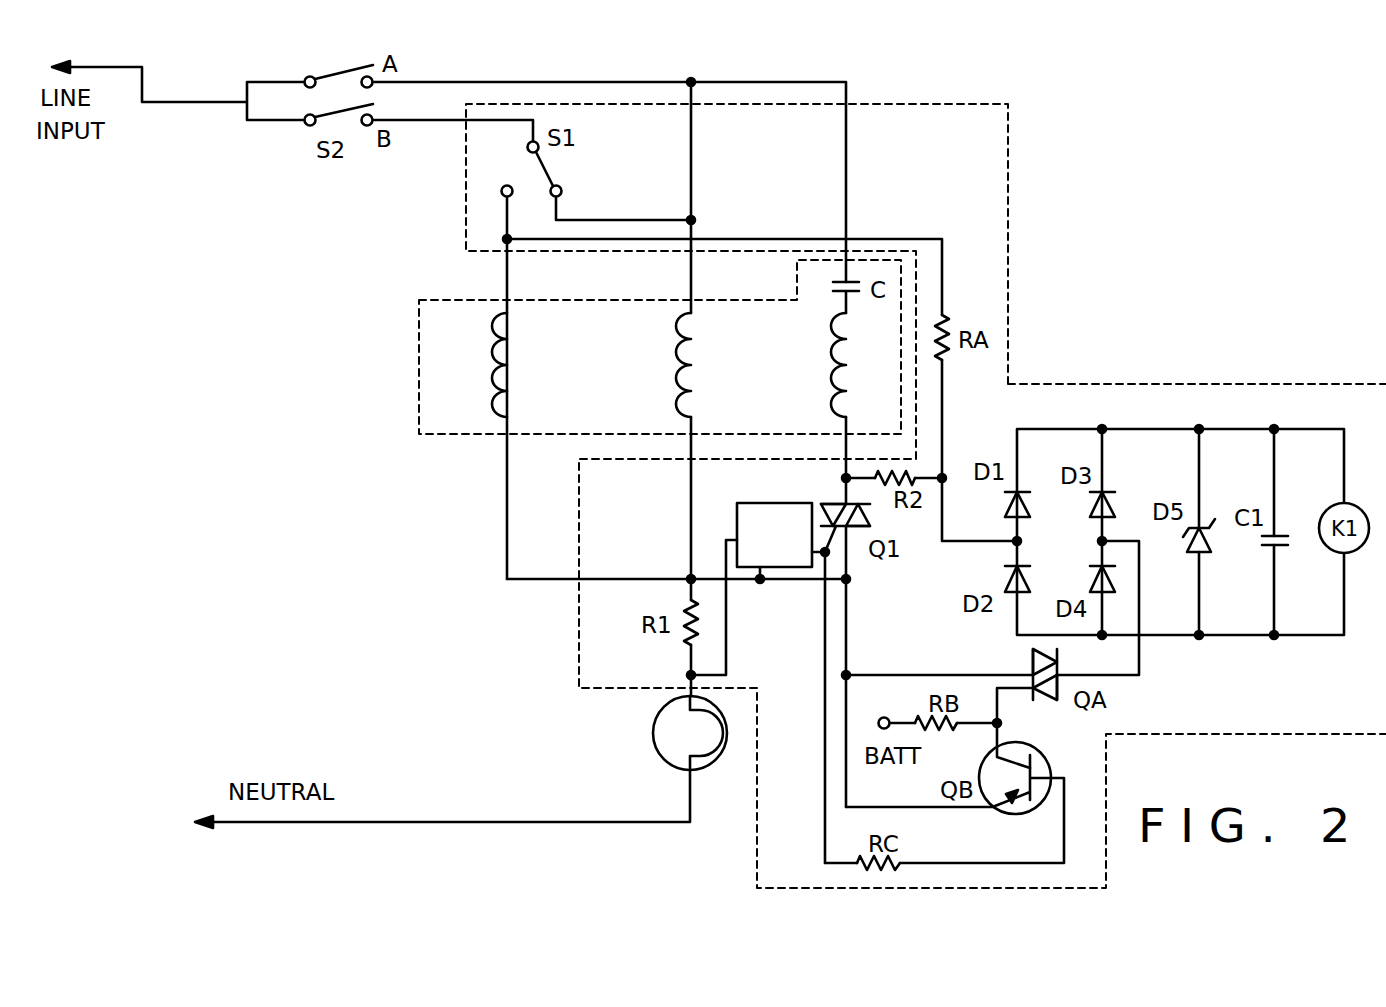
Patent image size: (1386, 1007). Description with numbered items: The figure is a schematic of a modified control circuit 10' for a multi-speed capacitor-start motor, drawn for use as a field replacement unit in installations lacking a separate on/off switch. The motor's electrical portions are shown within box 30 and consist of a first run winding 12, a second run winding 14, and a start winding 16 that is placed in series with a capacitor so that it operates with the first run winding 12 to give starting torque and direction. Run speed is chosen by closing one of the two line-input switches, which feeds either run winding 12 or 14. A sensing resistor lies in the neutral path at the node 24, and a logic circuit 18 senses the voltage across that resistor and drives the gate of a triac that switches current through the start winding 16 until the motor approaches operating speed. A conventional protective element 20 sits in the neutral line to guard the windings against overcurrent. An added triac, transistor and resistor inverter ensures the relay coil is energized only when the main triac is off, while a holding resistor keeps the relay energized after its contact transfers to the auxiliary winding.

The modified control circuit 10' is at (926, 496).
The first run winding 12 is at (658, 365).
The second run winding 14 is at (478, 365).
The start winding 16 is at (819, 365).
The logic circuit 18 is at (781, 568).
The protective element 20 is at (653, 730).
The common node 24 is at (691, 579).
The motor electrical portions 30 is at (419, 382).